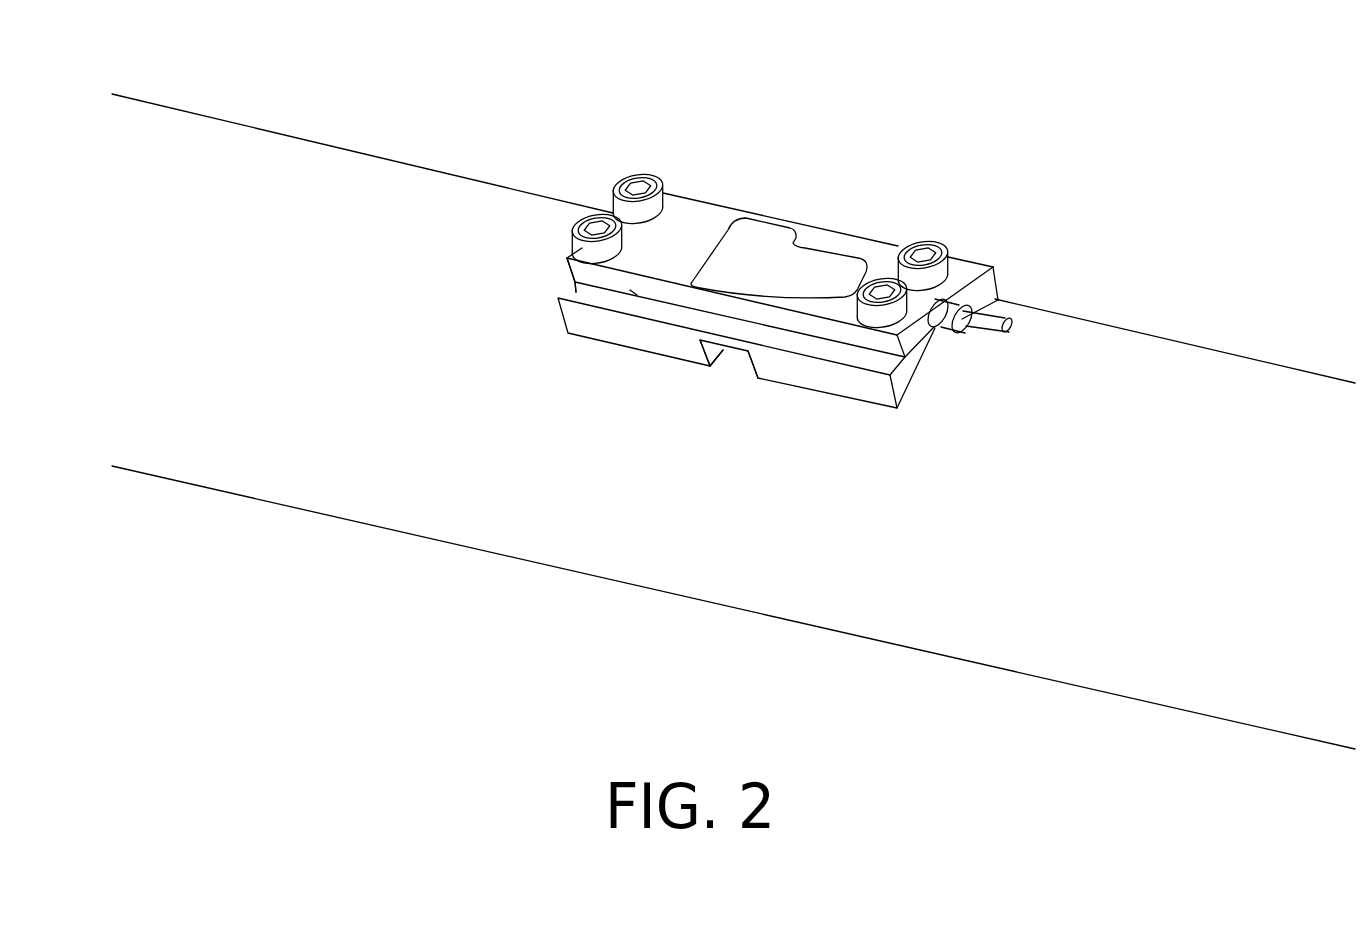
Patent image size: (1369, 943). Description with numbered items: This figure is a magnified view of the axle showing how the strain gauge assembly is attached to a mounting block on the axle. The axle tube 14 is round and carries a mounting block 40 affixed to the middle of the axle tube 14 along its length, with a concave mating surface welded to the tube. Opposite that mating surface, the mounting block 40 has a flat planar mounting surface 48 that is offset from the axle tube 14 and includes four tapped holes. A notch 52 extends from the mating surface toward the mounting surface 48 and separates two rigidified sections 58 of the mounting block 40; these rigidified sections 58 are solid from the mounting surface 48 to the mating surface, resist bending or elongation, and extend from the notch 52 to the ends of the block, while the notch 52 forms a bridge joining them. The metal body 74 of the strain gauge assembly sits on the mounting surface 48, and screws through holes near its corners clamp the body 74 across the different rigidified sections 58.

The axle tube 14 is at (462, 177).
The mounting block 40 is at (992, 288).
The mounting surface 48 is at (577, 293).
The notch 52 is at (730, 354).
The rigidified sections 58 is at (593, 330).
The body 74 is at (872, 250).